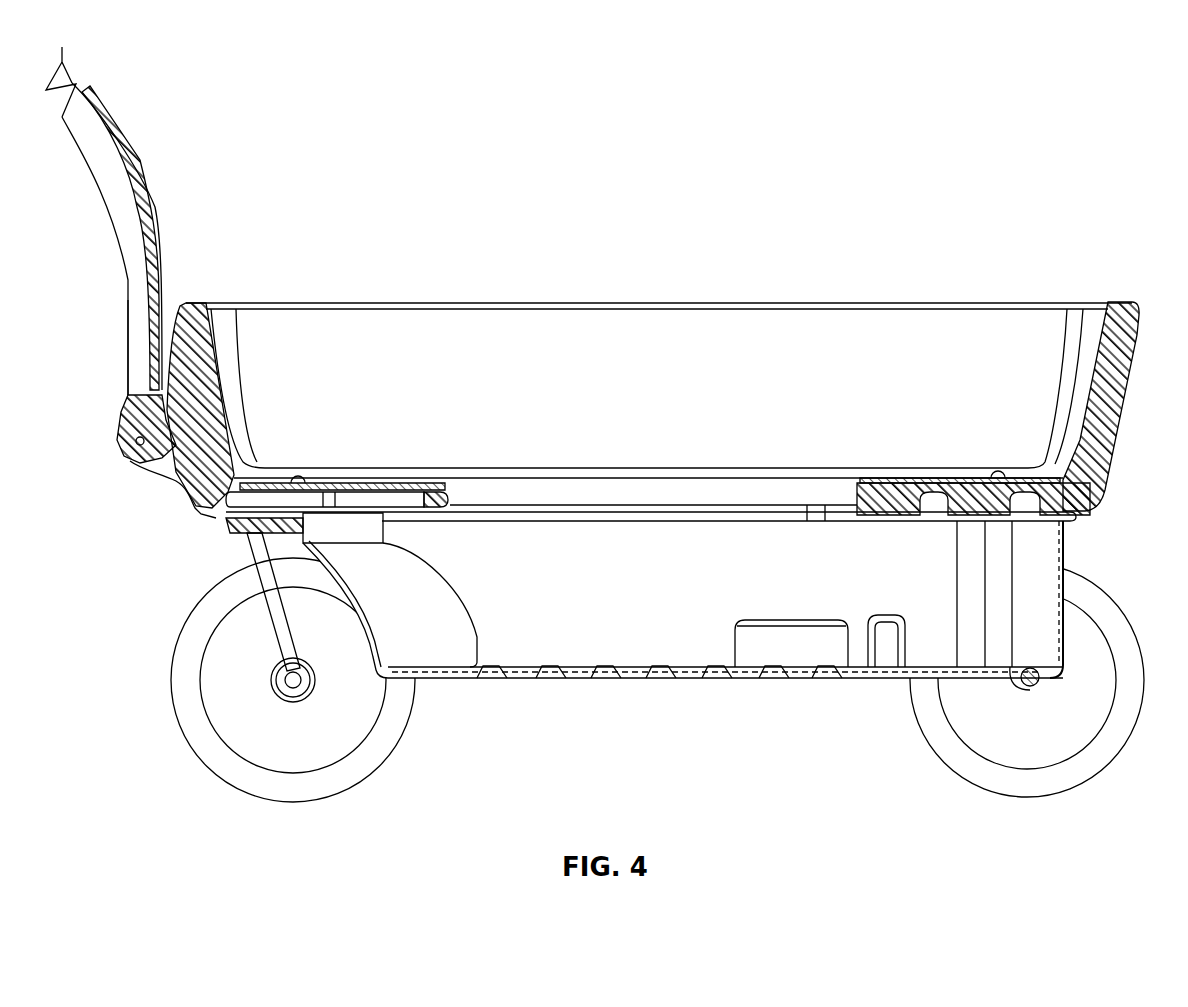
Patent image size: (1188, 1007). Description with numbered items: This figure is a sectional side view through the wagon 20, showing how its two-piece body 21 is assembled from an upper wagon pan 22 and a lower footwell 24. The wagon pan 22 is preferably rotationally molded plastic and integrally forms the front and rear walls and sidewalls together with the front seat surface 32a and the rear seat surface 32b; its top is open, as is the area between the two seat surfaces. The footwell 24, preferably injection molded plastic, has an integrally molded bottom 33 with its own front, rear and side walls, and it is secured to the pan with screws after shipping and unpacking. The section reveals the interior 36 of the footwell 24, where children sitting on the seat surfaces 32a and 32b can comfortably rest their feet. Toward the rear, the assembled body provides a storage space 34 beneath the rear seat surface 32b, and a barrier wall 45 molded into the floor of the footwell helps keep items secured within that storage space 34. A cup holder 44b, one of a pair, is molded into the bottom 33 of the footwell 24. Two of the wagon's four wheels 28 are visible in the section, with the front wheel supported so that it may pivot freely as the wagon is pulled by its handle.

The wagon 20 is at (845, 64).
The two-piece body 21 is at (1118, 511).
The wagon pan 22 is at (192, 298).
The footwell 24 is at (571, 694).
The wheels 28 is at (333, 780).
The front seat surface 32a is at (373, 488).
The rear seat surface 32b is at (965, 485).
The bottom 33 is at (623, 673).
The storage space 34 is at (935, 607).
The interior of footwell 36 is at (570, 643).
The cup holder 44b is at (773, 647).
The barrier wall 45 is at (883, 618).